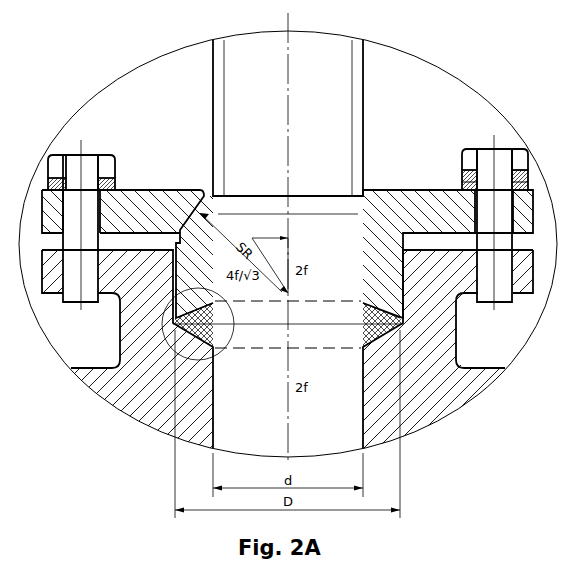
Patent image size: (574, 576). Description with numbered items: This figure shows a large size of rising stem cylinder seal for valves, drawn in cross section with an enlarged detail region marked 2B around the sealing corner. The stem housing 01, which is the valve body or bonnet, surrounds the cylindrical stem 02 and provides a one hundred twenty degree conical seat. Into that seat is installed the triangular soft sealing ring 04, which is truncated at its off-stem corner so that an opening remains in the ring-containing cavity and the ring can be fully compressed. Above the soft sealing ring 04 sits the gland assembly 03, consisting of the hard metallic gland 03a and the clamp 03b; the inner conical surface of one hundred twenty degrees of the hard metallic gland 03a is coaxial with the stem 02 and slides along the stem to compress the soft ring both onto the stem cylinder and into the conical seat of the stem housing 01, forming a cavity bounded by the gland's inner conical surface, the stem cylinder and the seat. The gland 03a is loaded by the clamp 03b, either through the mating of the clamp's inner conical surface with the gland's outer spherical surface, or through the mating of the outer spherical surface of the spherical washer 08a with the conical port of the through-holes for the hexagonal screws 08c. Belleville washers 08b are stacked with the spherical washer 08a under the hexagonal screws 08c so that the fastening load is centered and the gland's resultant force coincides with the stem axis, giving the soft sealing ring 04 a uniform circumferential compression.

The stem housing 01 is at (143, 370).
The stem 02 is at (357, 128).
The flange 03 is at (287, 236).
The hard metallic gland 03a is at (212, 202).
The clamp 03b is at (170, 203).
The soft sealing ring 04 is at (371, 336).
The spherical washer 08a is at (491, 148).
The Belleville washer 08b is at (81, 155).
The hexagonal screw 08c is at (118, 115).
The detail view 2B circle 2B is at (178, 353).